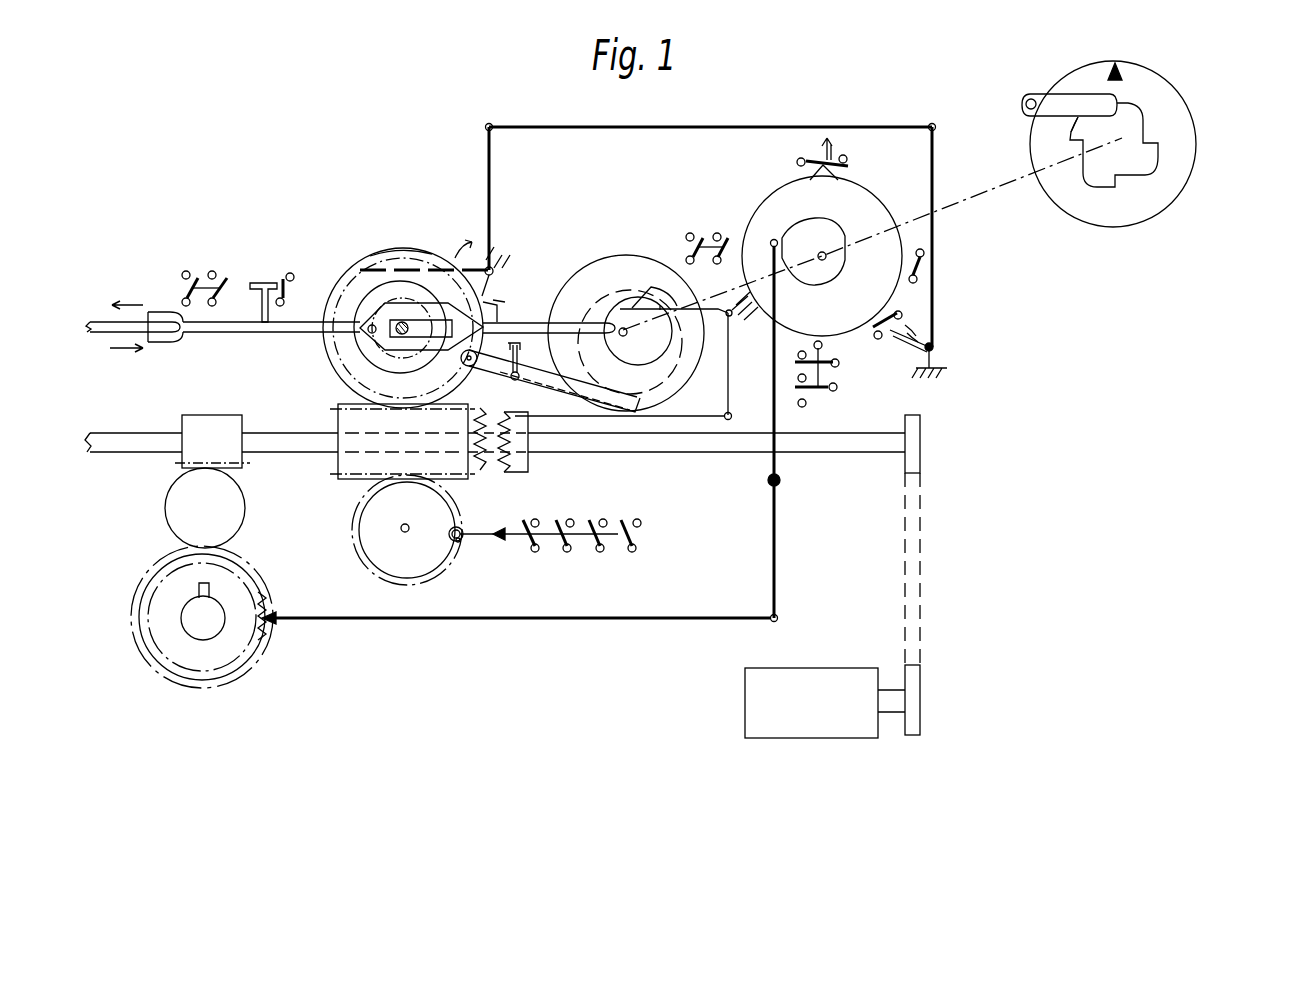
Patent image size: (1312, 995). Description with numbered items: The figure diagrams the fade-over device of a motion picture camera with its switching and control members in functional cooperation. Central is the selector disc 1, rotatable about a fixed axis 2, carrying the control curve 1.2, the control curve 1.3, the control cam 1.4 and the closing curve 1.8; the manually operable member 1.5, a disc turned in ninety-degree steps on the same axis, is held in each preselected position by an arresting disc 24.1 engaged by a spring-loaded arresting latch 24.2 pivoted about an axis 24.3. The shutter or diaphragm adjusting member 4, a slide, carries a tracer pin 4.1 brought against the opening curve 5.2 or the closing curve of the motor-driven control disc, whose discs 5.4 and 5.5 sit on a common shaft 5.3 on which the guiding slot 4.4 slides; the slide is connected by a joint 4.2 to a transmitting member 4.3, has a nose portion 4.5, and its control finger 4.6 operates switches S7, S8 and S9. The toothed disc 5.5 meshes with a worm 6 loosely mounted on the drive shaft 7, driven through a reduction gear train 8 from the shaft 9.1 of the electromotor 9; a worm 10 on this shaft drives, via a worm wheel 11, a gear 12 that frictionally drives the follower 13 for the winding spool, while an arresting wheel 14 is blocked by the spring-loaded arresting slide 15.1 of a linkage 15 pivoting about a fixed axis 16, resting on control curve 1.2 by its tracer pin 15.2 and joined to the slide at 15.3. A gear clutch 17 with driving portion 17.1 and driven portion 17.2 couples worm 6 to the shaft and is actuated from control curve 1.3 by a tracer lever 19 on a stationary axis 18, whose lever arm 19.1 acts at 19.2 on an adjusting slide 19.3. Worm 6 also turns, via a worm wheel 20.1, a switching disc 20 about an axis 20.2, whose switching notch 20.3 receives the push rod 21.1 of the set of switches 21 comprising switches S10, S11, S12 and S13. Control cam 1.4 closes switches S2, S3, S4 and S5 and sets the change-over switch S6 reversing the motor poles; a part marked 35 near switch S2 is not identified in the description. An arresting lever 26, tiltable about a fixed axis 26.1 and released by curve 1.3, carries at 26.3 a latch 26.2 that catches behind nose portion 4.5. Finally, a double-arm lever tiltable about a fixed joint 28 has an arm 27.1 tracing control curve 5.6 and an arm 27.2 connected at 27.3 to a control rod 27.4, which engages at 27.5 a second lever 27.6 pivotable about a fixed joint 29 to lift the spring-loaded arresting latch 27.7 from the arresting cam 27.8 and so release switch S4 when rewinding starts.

The selector disc 1 is at (863, 204).
The control curve 1.2 is at (819, 226).
The control curve 1.3 is at (672, 352).
The control cam 1.4 is at (810, 173).
The manually operable member 1.5 is at (1165, 100).
The closing curve 1.8 is at (650, 298).
The fixed axis 2 is at (962, 203).
The shutter or diaphragm adjusting member 4 is at (257, 328).
The tracer pin 4.1 is at (368, 332).
The joint 4.2 is at (158, 340).
The transmitting member 4.3 is at (105, 324).
The guiding slot 4.4 is at (442, 328).
The nose portion 4.5 is at (497, 330).
The control finger 4.6 is at (267, 284).
The opening curve 5.2 is at (385, 352).
The common shaft 5.3 is at (402, 322).
The disc 5.4 is at (396, 252).
The disc 5.5 is at (345, 268).
The control curve 5.6 is at (352, 300).
The worm 6 is at (338, 457).
The drive shaft 7 is at (707, 445).
The reduction gear train 8 is at (920, 572).
The electromotor 9 is at (766, 680).
The shaft 9.1 is at (895, 700).
The worm 10 is at (212, 425).
The worm wheel 11 is at (163, 490).
The gear 12 is at (135, 600).
The follower 13 is at (190, 621).
The locking or arresting wheel 14 is at (265, 638).
The linkage 15 is at (778, 540).
The arresting slide 15.1 is at (273, 620).
The tracer pin 15.2 is at (773, 241).
The pivotal connection 15.3 is at (778, 618).
The fixed axis 16 is at (780, 484).
The gear coupling or clutch 17 is at (497, 455).
The driving portion 17.1 is at (523, 460).
The driven portion 17.2 is at (476, 468).
The stationary axis 18 is at (733, 317).
The tracer lever 19 is at (683, 307).
The lever arm 19.1 is at (730, 345).
The engagement point 19.2 is at (732, 416).
The adjusting slide 19.3 is at (706, 405).
The switching disc 20 is at (360, 533).
The worm wheel 20.1 is at (355, 490).
The axis 20.2 is at (406, 533).
The switching notch 20.3 is at (452, 530).
The set of switches 21 is at (585, 516).
The push rod 21.1 is at (460, 542).
The arresting disc 24.1 is at (1145, 163).
The arresting latch 24.2 is at (1077, 108).
The axis 24.3 is at (1028, 100).
The arresting lever 26 is at (572, 398).
The fixed axis 26.1 is at (470, 367).
The latch 26.2 is at (520, 345).
The connection point 26.3 is at (516, 380).
The tracer arm 27.1 is at (430, 266).
The lever arm 27.2 is at (490, 198).
The pivot connection 27.3 is at (487, 124).
The control rod 27.4 is at (708, 127).
The engagement point 27.5 is at (940, 113).
The second lever 27.6 is at (933, 258).
The arresting latch 27.7 is at (907, 334).
The arresting cam 27.8 is at (907, 324).
The fixed joint 28 is at (496, 266).
The fixed joint 29 is at (937, 367).
The switch actuator 35 is at (812, 145).
The switch S2 is at (810, 162).
The switch S3 is at (913, 256).
The switch S4 is at (887, 336).
The double-pole switch S5 is at (707, 238).
The change-over switch S6 is at (827, 374).
The switch S7 is at (286, 280).
The switch S8 is at (219, 280).
The switch S9 is at (199, 280).
The switch S10 is at (533, 546).
The switch S11 is at (566, 546).
The switch S12 is at (600, 546).
The switch S13 is at (633, 546).